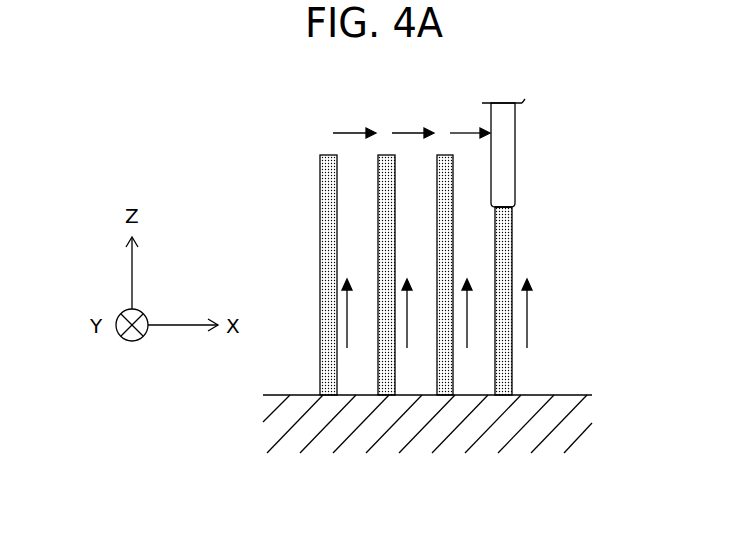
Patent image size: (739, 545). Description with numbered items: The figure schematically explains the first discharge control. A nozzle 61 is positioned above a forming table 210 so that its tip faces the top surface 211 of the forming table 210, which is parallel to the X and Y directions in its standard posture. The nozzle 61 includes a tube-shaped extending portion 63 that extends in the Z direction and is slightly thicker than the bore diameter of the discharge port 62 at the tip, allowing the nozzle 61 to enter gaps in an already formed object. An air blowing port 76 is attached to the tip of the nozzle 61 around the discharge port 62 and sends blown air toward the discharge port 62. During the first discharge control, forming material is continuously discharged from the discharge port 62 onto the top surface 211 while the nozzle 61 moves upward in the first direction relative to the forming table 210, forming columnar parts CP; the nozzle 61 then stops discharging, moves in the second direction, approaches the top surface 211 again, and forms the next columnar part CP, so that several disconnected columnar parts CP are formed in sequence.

The nozzle 61 is at (541, 237).
The extending portion 63 is at (505, 137).
The air blowing port 76 is at (513, 207).
The discharge port 62 is at (513, 230).
The columnar part CP is at (323, 213).
The top surface 211 is at (557, 395).
The forming table 210 is at (582, 412).